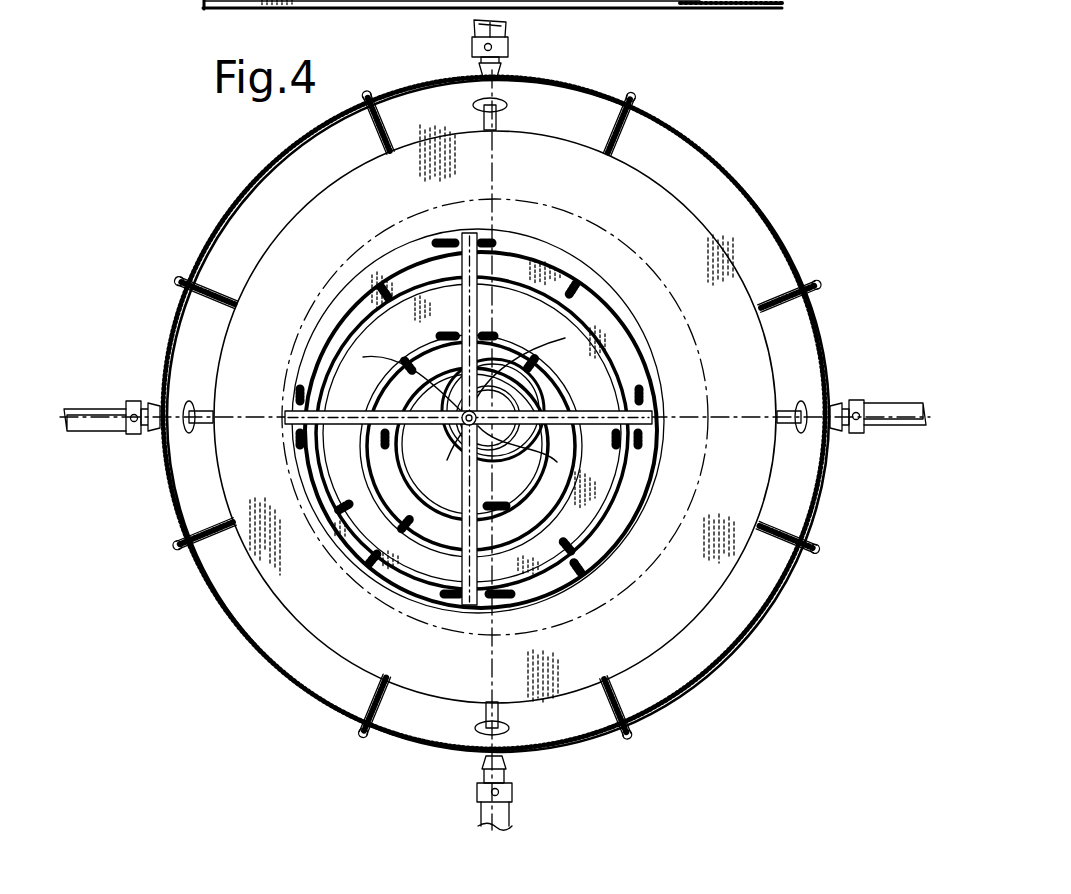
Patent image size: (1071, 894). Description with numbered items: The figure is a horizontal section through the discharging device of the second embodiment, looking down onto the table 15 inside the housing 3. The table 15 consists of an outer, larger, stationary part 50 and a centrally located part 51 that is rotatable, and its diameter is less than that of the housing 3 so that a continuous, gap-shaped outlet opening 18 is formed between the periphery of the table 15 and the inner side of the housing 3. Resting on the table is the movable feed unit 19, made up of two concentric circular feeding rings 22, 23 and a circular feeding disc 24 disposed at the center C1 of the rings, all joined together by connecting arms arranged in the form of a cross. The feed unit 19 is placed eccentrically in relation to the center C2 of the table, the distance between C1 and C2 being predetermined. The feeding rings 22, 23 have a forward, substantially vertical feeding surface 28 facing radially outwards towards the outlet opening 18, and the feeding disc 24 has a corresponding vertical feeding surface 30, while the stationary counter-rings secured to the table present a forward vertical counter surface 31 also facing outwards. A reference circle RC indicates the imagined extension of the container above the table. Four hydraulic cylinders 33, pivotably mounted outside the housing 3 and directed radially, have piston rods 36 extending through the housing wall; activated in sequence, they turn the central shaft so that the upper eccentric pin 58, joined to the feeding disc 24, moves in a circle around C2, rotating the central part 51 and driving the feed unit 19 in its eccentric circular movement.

The housing 3 is at (652, 703).
The table 15 is at (750, 468).
The outlet opening 18 is at (690, 638).
The feed unit 19 is at (598, 271).
The outer feeding ring 22 is at (355, 563).
The inner feeding ring 23 is at (500, 432).
The feeding disc 24 is at (508, 365).
The feeding surface 28 is at (552, 462).
The feeding surface 30 is at (512, 505).
The counter surface 31 is at (485, 367).
The hydraulic cylinders 33 is at (880, 428).
The piston rods 36 is at (790, 400).
The stationary table part 50 is at (690, 592).
The central table part 51 is at (516, 436).
The upper eccentric pin 58 is at (398, 378).
The center of the feeding rings C1 is at (468, 419).
The center of the table C2 is at (546, 390).
The reference circle RC is at (578, 622).